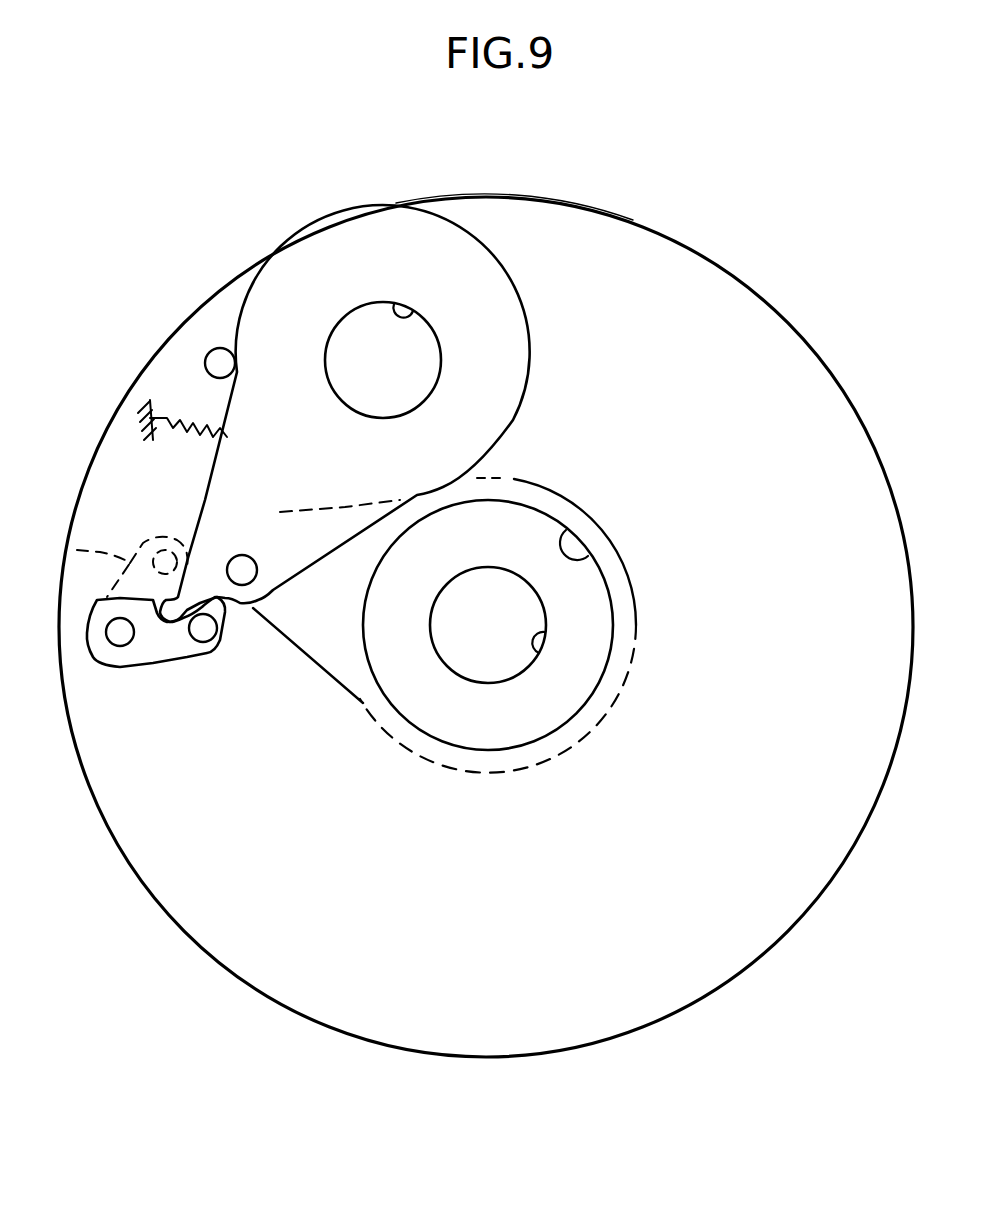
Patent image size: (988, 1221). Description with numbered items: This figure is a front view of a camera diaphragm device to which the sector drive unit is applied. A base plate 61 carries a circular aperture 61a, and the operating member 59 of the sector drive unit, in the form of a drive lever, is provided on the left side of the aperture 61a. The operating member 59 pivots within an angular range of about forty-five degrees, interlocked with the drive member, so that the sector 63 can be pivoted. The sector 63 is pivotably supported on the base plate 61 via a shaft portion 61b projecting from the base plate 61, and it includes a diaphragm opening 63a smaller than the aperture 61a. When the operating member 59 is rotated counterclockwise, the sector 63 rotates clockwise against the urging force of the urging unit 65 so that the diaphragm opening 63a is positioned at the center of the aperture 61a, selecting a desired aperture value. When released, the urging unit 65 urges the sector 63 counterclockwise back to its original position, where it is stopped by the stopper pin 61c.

The operating member 59 is at (87, 623).
The base plate 61 is at (617, 237).
The aperture 61a is at (577, 553).
The shaft portion 61b is at (245, 585).
The stopper pin 61c is at (210, 350).
The sector 63 is at (553, 488).
The diaphragm opening 63a is at (417, 310).
The urging unit 65 is at (183, 440).